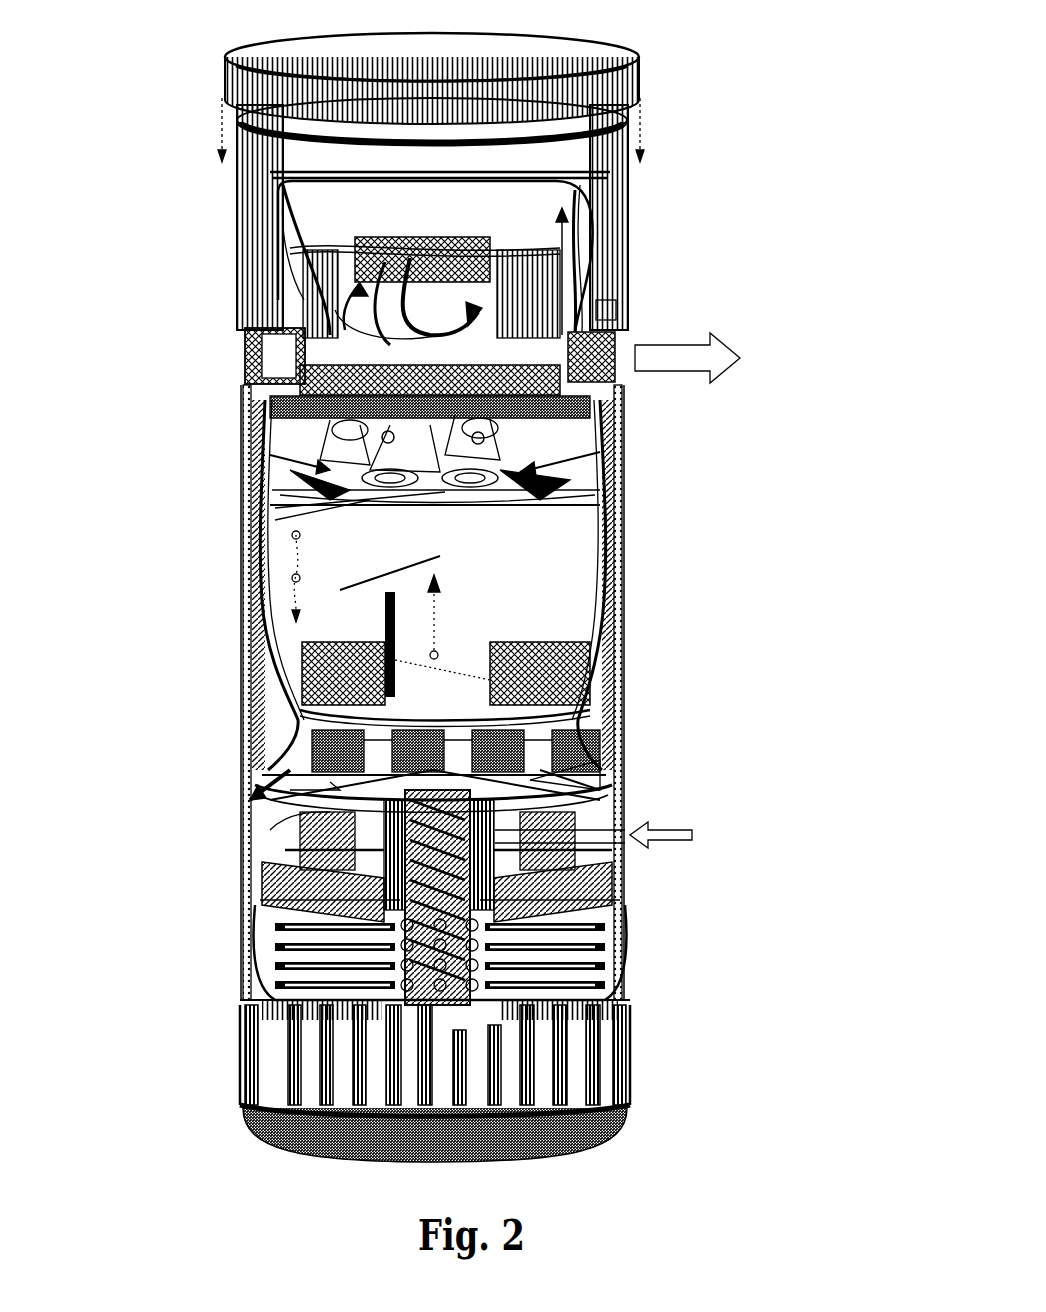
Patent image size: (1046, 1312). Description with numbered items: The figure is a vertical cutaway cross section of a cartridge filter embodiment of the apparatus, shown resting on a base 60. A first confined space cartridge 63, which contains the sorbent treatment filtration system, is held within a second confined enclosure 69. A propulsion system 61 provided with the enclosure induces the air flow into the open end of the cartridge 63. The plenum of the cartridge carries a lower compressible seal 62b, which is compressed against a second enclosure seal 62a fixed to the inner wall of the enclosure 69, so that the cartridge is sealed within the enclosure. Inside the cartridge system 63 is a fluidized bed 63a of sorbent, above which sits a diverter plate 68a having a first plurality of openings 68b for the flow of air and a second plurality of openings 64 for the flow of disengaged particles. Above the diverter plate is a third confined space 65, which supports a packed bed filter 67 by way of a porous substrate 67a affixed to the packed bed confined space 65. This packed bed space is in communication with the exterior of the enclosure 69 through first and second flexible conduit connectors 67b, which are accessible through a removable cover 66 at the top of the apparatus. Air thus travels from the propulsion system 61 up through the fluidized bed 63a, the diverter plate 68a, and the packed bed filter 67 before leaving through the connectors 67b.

The base 60 is at (243, 1055).
The propulsion system 61 is at (238, 822).
The second enclosure seal 62a is at (242, 745).
The lower compressible seal 62b is at (530, 780).
The first confined space cartridge 63 is at (247, 575).
The fluidized bed 63a is at (524, 640).
The second plurality of openings 64 is at (248, 398).
The third confined space 65 is at (338, 268).
The removable cover 66 is at (298, 80).
The packed bed filter 67 is at (430, 232).
The porous substrate 67a is at (430, 326).
The first and second flexible conduit connectors 67b is at (625, 432).
The diverter plate 68a is at (625, 452).
The first plurality of openings 68b is at (625, 470).
The second confined enclosure 69 is at (627, 648).